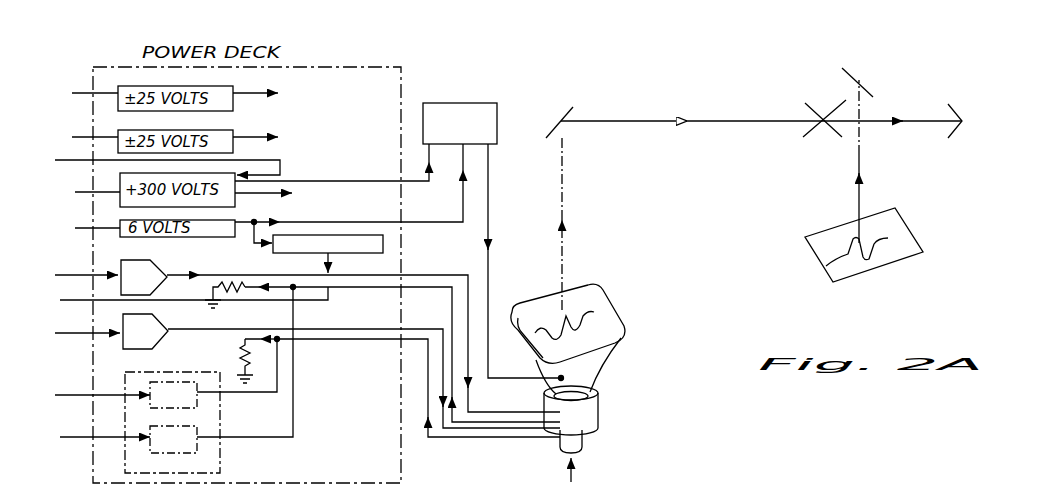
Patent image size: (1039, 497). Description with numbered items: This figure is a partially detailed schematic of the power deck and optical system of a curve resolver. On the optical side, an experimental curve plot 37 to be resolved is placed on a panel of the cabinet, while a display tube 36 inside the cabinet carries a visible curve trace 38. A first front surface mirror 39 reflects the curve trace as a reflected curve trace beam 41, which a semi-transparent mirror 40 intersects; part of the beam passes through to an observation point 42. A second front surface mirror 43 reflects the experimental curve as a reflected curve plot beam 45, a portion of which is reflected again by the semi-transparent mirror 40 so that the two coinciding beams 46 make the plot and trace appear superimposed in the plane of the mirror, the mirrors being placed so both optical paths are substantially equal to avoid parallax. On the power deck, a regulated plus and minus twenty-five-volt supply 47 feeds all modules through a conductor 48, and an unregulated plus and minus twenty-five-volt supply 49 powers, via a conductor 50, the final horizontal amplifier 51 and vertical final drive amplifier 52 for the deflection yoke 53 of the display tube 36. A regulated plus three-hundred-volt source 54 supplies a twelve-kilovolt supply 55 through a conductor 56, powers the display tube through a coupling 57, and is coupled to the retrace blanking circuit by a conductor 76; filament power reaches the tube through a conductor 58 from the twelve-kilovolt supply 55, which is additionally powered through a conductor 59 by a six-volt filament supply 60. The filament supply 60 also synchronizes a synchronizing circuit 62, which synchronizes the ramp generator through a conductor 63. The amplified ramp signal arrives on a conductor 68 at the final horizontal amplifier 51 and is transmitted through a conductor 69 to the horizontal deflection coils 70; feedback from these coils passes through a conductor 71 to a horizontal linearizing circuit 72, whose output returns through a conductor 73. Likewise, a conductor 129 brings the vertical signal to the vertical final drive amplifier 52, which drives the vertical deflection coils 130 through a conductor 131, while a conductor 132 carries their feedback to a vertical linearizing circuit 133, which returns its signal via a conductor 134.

The display tube 36 is at (612, 352).
The experimental curve plot 37 is at (923, 232).
The visible curve trace 38 is at (578, 318).
The first front surface mirror 39 is at (559, 112).
The semi-transparent mirror 40 is at (817, 130).
The reflected curve trace beam 41 is at (638, 111).
The observation point 42 is at (962, 121).
The second front surface mirror 43 is at (853, 75).
The reflected curve plot beam 45 is at (837, 104).
The coinciding beams 46 is at (904, 117).
The regulated plus and minus 25-volt supply 47 is at (80, 138).
The conductor 48 is at (269, 138).
The unregulated plus and minus 25-volt supply 49 is at (80, 95).
The conductor 50 is at (269, 95).
The final horizontal amplifier 51 is at (144, 277).
The vertical final drive amplifier 52 is at (145, 331).
The deflection yoke 53 is at (598, 407).
The regulated plus 300-volt source 54 is at (81, 192).
The 12 kilovolt supply 55 is at (463, 103).
The conductor 56 is at (338, 180).
The coupling 57 is at (276, 195).
The conductor 58 is at (490, 220).
The conductor 59 is at (352, 221).
The 6-volt filament supply 60 is at (81, 229).
The synchronizing circuit 62 is at (318, 247).
The conductor 63 is at (172, 299).
The conductor 68 is at (68, 277).
The conductor 69 is at (433, 273).
The horizontal deflection coils 70 is at (556, 420).
The conductor 71 is at (372, 288).
The horizontal linearizing circuit 72 is at (221, 370).
The conductor 73 is at (84, 438).
The conductor 76 is at (152, 163).
The conductor 129 is at (65, 334).
The vertical deflection coils 130 is at (590, 428).
The conductor 131 is at (203, 333).
The conductor 132 is at (362, 341).
The vertical linearizing circuit 133 is at (213, 373).
The conductor 134 is at (80, 396).